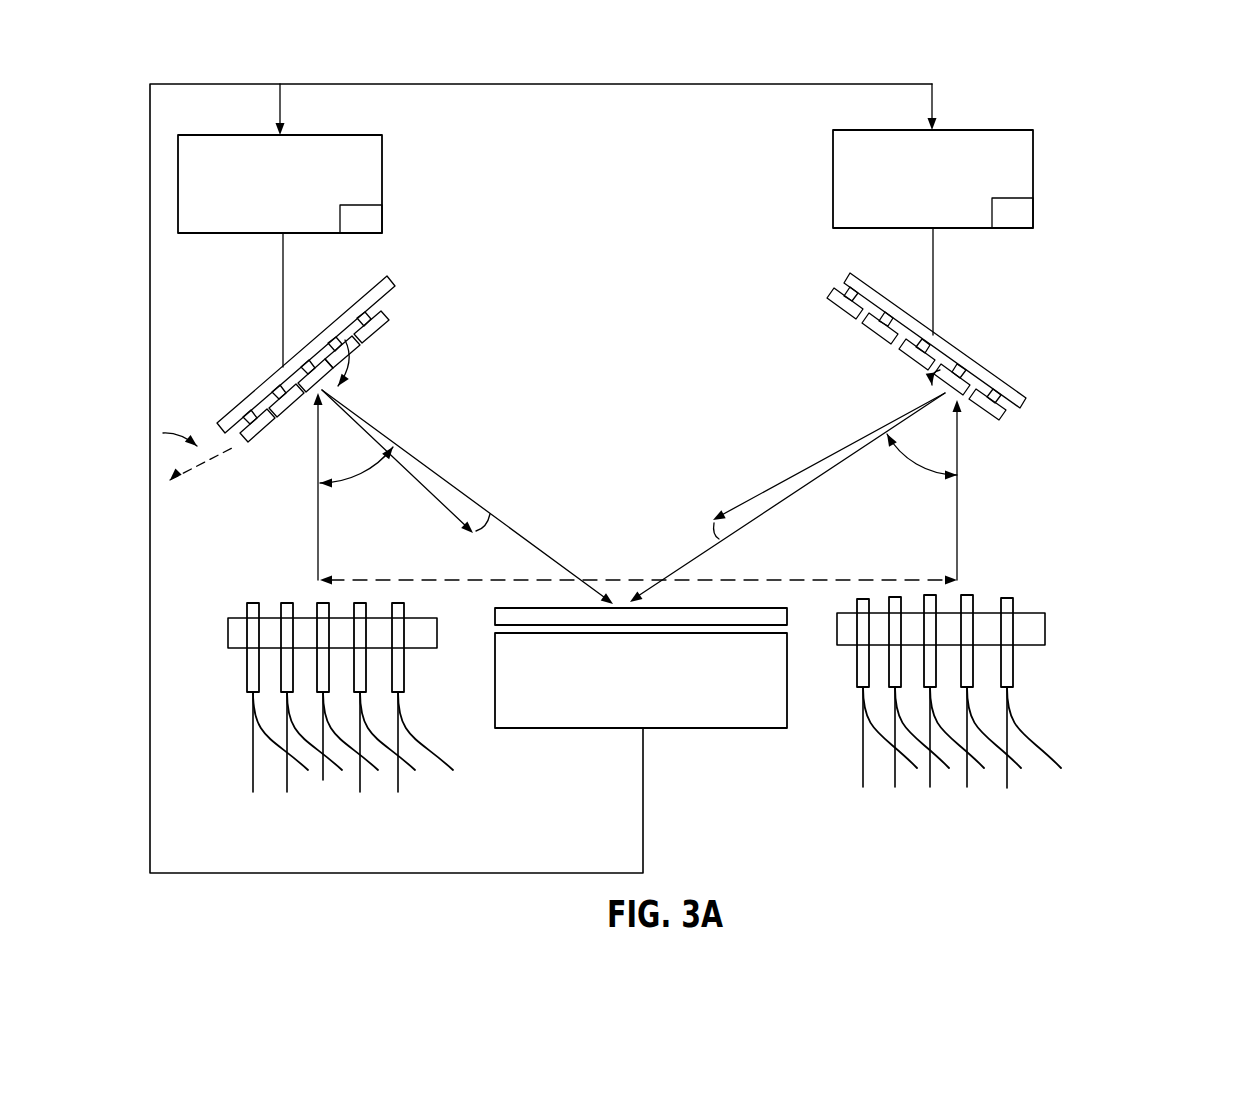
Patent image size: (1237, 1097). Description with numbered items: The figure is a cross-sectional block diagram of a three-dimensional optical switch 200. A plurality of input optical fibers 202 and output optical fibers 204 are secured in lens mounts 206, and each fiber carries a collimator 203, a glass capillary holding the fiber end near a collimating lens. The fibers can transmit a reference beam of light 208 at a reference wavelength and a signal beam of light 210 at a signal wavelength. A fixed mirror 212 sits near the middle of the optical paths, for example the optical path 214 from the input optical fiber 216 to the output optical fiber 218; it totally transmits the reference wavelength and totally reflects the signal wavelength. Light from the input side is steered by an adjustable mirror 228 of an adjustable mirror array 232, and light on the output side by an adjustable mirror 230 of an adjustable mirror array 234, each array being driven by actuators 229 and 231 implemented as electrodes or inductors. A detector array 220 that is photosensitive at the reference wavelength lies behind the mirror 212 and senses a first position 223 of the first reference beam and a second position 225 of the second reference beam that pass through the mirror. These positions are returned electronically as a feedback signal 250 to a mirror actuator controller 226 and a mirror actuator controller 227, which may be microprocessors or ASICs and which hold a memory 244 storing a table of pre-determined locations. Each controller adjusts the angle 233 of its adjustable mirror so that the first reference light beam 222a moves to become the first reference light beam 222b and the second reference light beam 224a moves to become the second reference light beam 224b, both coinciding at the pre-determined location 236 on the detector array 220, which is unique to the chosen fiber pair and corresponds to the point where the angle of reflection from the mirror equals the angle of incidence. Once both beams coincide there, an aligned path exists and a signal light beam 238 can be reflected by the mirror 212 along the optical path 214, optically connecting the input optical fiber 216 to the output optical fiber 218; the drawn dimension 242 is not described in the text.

The optical switch 200 is at (1118, 112).
The input optical fibers 202 is at (405, 672).
The collimator 203 is at (250, 676).
The output optical fibers 204 is at (1013, 598).
The lens mounts 206 is at (228, 630).
The reference beam of light 208 is at (455, 752).
The signal beam of light 210 is at (325, 792).
The fixed mirror 212 is at (735, 608).
The optical path 214 is at (375, 467).
The input optical fiber 216 is at (315, 605).
The output optical fiber 218 is at (973, 600).
The detector array 220 is at (722, 728).
The first reference light beam 222a is at (430, 497).
The first reference light beam 222b is at (515, 524).
The first position 223 is at (612, 602).
The second reference light beam 224a is at (773, 487).
The second reference light beam 224b is at (790, 500).
The second position 225 is at (633, 600).
The mirror actuator controller 226 is at (338, 135).
The mirror actuator controller 227 is at (983, 130).
The adjustable mirror 228 is at (313, 397).
The actuator 229 is at (342, 337).
The adjustable mirror 230 is at (960, 403).
The actuator 231 is at (917, 350).
The adjustable mirror array 232 is at (390, 282).
The angle 233 is at (214, 468).
The adjustable mirror array 234 is at (845, 280).
The pre-determined location 236 is at (618, 607).
The signal light beam 238 is at (375, 428).
The mirror separation distance 242 is at (918, 578).
The memory 244 is at (385, 213).
The feedback signal 250 is at (190, 875).